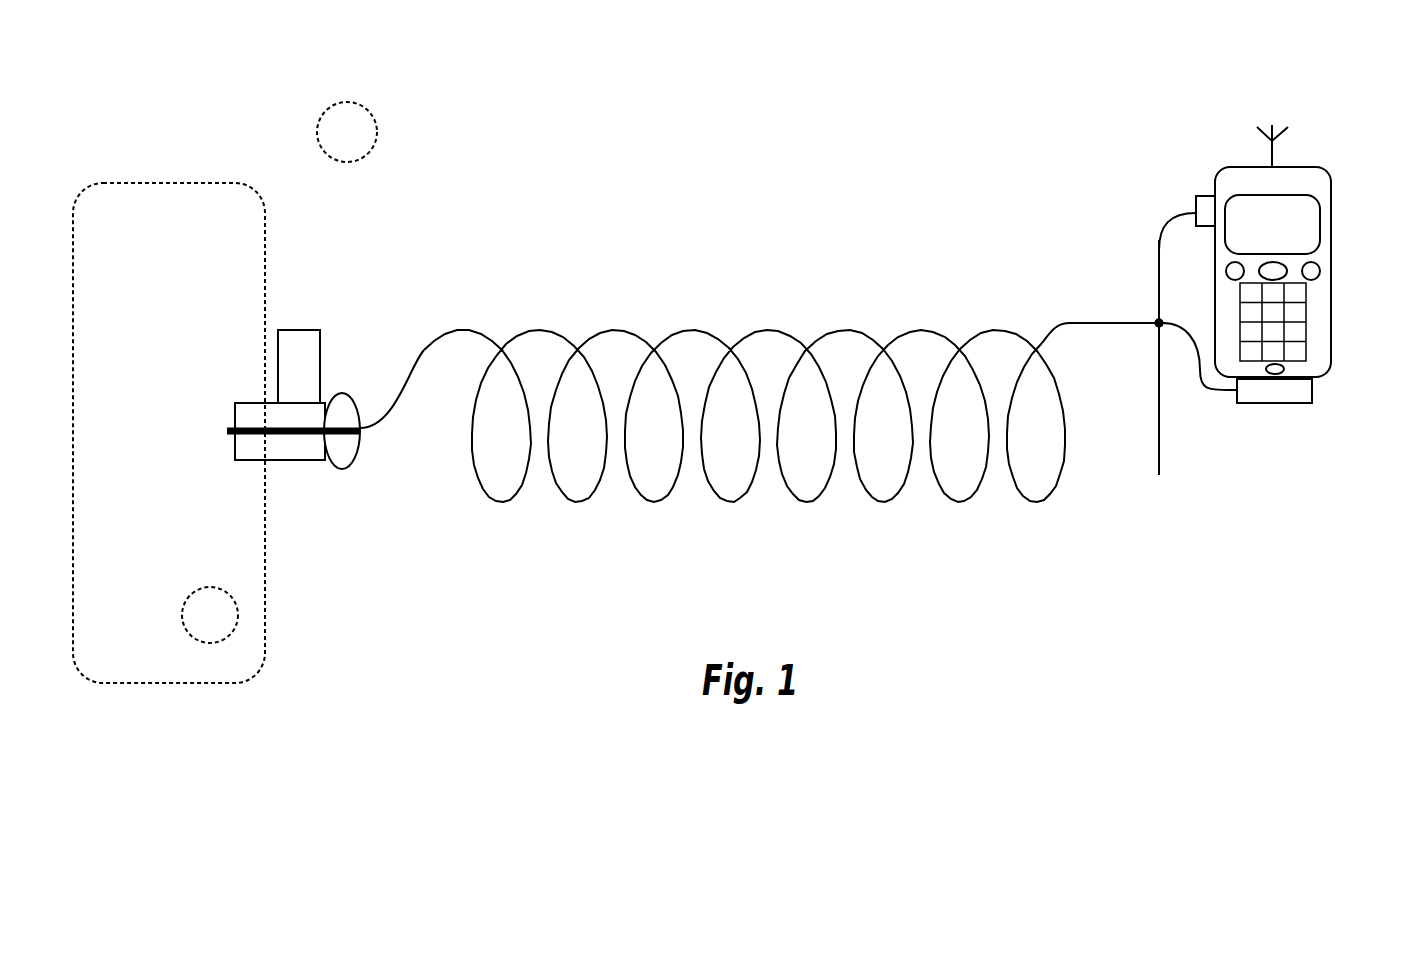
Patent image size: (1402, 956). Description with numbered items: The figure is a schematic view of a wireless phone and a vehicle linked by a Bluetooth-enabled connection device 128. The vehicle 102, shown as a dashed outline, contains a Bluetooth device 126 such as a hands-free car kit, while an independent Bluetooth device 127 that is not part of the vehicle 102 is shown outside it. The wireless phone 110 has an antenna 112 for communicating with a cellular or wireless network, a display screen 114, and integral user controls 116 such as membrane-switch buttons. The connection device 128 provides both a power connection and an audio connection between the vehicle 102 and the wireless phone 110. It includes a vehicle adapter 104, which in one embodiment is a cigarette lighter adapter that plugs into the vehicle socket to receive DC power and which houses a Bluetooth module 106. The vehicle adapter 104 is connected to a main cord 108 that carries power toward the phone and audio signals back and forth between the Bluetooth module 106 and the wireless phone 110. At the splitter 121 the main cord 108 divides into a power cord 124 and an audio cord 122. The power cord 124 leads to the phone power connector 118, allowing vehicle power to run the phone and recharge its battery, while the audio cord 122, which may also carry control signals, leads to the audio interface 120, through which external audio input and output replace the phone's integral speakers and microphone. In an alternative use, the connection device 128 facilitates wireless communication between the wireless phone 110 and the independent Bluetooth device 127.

The vehicle 102 is at (167, 183).
The vehicle adapter 104 is at (287, 460).
The Bluetooth module 106 is at (293, 330).
The main cord 108 is at (610, 330).
The wireless phone 110 is at (1331, 252).
The antenna 112 is at (1283, 132).
The display screen 114 is at (1331, 213).
The integral user controls 116 is at (1320, 320).
The phone power connector 118 is at (1302, 403).
The audio interface 120 is at (1195, 196).
The splitter 121 is at (1162, 370).
The audio cord 122 is at (1158, 255).
The power cord 124 is at (1203, 395).
The Bluetooth device 126 is at (226, 606).
The independent Bluetooth device 127 is at (345, 108).
The connection device 128 is at (784, 251).